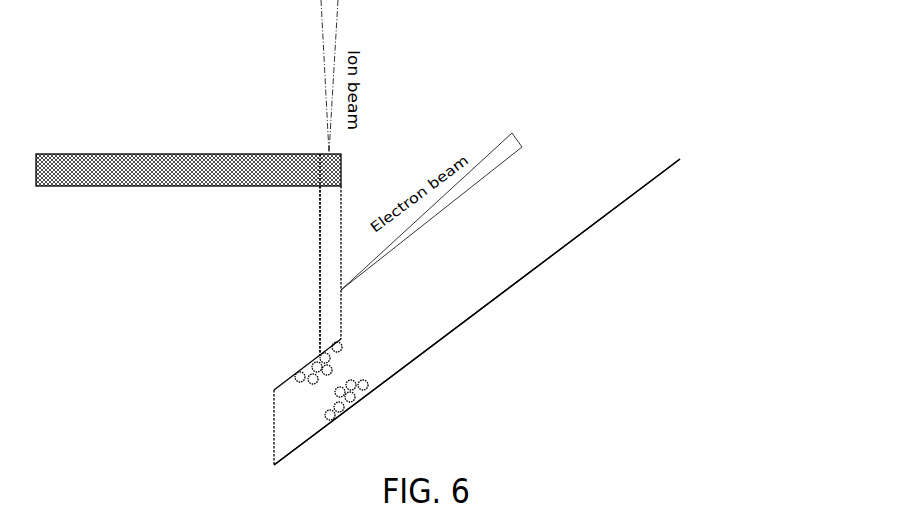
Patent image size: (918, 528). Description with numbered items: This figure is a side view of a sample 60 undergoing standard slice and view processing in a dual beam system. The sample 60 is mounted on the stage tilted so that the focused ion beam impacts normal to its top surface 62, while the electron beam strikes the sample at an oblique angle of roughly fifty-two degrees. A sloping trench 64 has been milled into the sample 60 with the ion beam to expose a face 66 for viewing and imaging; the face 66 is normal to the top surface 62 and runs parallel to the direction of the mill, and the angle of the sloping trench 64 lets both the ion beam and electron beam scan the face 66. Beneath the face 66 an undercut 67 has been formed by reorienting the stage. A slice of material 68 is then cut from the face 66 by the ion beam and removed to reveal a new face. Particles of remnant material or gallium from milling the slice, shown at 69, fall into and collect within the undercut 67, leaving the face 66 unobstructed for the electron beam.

The sample 60 is at (216, 224).
The top surface 62 is at (212, 154).
The sloping trench 64 is at (530, 210).
The face 66 is at (342, 200).
The undercut 67 is at (292, 417).
The slice of material 68 is at (329, 226).
The particles 69 is at (343, 345).